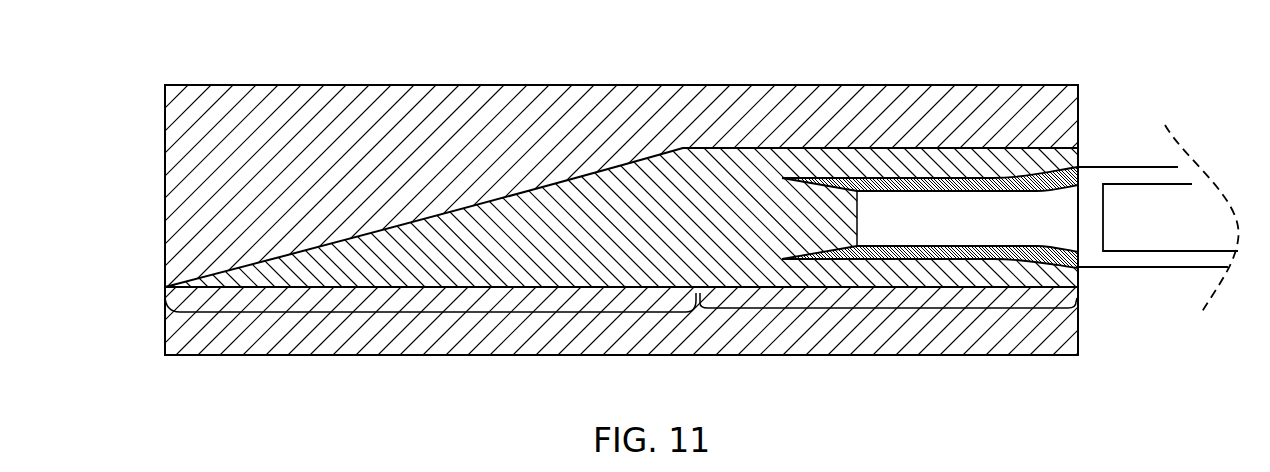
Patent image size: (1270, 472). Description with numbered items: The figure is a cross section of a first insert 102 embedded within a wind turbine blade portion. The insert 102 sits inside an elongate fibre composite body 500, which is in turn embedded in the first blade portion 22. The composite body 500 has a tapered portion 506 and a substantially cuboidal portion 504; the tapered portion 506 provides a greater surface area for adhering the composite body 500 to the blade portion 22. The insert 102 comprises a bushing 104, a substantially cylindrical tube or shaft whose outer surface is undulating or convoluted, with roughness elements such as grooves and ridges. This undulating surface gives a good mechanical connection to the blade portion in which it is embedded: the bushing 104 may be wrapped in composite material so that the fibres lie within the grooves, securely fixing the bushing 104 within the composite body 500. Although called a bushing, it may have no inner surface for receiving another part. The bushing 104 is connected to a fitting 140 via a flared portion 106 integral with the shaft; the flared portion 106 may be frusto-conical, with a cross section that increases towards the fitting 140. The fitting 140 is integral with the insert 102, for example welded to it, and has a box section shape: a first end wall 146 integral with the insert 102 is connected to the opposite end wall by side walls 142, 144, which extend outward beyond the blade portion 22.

The first blade portion 22 is at (273, 144).
The elongate fibre composite body 500 is at (768, 119).
The bushing 104 is at (890, 187).
The flared portion 106 is at (1050, 171).
The first end wall 146 is at (1087, 192).
The fitting 140 is at (1127, 100).
The side wall 144 is at (1120, 167).
The first insert 102 is at (1087, 274).
The side wall 142 is at (1168, 269).
The substantially cuboidal portion 504 is at (872, 309).
The tapered portion 506 is at (418, 313).